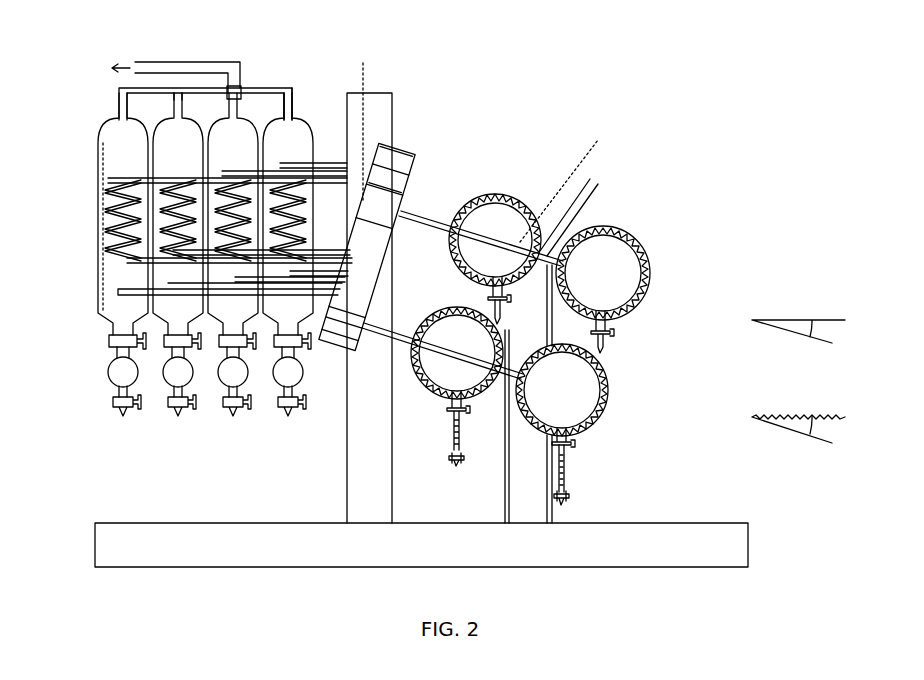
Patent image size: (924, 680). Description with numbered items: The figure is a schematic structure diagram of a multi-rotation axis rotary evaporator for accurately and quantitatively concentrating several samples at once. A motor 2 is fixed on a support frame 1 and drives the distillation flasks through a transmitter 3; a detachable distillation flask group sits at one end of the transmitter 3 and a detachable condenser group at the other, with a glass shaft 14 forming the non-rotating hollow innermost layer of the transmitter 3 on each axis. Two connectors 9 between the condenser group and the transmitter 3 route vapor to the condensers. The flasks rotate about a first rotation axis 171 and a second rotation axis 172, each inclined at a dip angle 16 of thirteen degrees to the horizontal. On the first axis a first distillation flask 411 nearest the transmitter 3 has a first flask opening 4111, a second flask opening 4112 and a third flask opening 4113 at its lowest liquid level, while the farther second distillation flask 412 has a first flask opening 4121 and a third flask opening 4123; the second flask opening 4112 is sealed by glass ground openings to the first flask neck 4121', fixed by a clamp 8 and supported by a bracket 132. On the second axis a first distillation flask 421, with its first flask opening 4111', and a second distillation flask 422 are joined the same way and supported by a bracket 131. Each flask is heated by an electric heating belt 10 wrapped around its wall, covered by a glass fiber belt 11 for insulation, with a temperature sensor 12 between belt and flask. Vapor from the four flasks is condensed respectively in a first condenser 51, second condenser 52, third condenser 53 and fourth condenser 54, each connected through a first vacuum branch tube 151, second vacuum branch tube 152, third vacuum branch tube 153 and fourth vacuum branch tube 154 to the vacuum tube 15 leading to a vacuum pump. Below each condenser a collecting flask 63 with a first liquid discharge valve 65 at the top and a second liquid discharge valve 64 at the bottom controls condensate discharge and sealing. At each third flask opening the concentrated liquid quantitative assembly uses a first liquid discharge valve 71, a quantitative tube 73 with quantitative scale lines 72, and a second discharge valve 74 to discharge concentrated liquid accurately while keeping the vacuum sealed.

The support frame 1 is at (349, 447).
The motor 2 is at (400, 162).
The transmitter 3 is at (400, 183).
The clamp 8 is at (574, 213).
The connector 9 is at (343, 243).
The electric heating belt 10 is at (647, 268).
The glass fiber belt 11 is at (652, 285).
The temperature sensor 12 is at (480, 200).
The glass shaft 14 is at (388, 147).
The vacuum tube 15 is at (188, 60).
The dip angle 16 is at (812, 325).
The first condenser 51 is at (108, 157).
The second condenser 52 is at (183, 143).
The third condenser 53 is at (238, 145).
The fourth condenser 54 is at (298, 143).
The collecting flask 63 is at (107, 374).
The second liquid discharge valve 64 is at (113, 403).
The first liquid discharge valve 65 is at (107, 341).
The first liquid discharge valve 71 is at (505, 298).
The quantitative scale lines 72 is at (565, 462).
The quantitative tube 73 is at (565, 473).
The second discharge valve 74 is at (568, 497).
The bracket 131 is at (505, 478).
The bracket 132 is at (547, 463).
The first vacuum branch tube 151 is at (128, 97).
The second vacuum branch tube 152 is at (178, 97).
The third vacuum branch tube 153 is at (238, 91).
The fourth vacuum branch tube 154 is at (292, 103).
The first rotation axis 171 is at (812, 341).
The second rotation axis 172 is at (815, 438).
The first distillation flask on the first axis 411 is at (505, 228).
The second distillation flask on the first axis 412 is at (608, 267).
The first distillation flask on the second axis 421 is at (480, 353).
The second distillation flask on the second axis 422 is at (582, 407).
The first flask opening 4111 is at (481, 222).
The first flask opening 4111' is at (442, 305).
The second flask opening 4112 is at (567, 235).
The third flask opening 4113 is at (480, 285).
The first flask opening 4121 is at (372, 119).
The first flask neck 4121' is at (584, 180).
The third flask opening 4123 is at (615, 322).